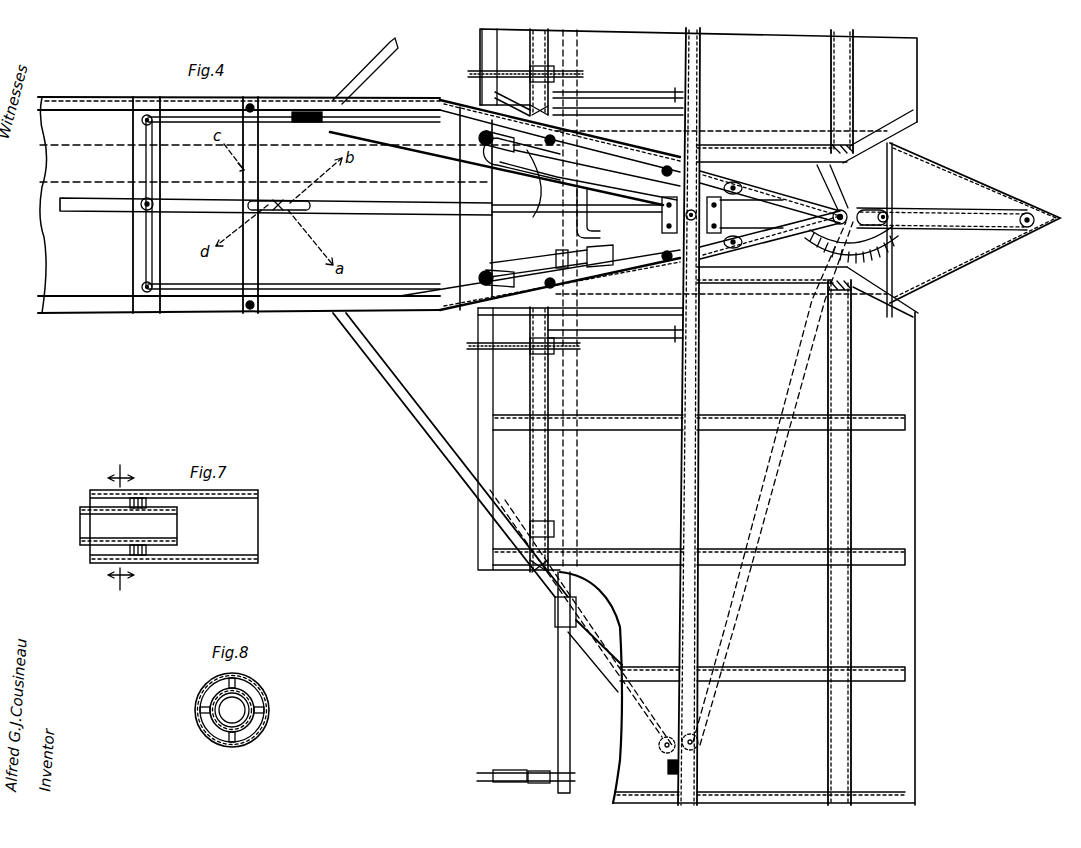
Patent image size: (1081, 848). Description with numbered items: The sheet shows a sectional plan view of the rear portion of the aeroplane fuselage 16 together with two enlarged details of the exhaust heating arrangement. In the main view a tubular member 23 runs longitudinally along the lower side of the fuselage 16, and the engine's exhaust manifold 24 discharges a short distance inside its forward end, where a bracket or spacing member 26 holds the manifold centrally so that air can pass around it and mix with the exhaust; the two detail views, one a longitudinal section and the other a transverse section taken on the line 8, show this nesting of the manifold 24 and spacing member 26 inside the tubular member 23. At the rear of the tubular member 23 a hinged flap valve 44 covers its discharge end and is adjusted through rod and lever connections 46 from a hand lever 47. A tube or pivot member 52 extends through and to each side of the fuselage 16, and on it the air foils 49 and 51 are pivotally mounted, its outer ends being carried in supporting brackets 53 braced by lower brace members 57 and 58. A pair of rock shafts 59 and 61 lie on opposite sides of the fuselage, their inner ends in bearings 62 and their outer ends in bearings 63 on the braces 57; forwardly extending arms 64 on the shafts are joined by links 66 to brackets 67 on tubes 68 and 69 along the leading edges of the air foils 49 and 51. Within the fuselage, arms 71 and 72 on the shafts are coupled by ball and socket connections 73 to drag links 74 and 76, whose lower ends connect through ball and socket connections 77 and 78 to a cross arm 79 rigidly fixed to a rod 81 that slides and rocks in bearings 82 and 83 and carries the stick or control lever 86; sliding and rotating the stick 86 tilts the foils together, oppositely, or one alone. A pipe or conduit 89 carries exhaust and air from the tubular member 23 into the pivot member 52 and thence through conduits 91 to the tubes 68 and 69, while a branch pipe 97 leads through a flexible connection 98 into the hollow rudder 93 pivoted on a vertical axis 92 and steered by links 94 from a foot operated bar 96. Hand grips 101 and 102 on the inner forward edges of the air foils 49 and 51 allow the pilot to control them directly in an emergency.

In FIG. 4, the fuselage 16 is at (105, 97).
In FIG. 4, the tubular member 23 is at (45, 183).
In FIG. 7, the tubular member 23 is at (250, 563).
In FIG. 8, the tubular member 23 is at (262, 733).
In FIG. 7, the exhaust manifold 24 is at (85, 516).
In FIG. 8, the exhaust manifold 24 is at (255, 704).
In FIG. 7, the bracket or spacing member 26 is at (148, 497).
In FIG. 8, the bracket or spacing member 26 is at (248, 684).
In FIG. 7, the section line 8— 8 is at (121, 528).
In FIG. 4, the flap valve 44 is at (640, 142).
In FIG. 4, the rod and lever connections 46 is at (432, 152).
In FIG. 4, the hand lever 47 is at (310, 112).
In FIG. 4, the air foil 49 is at (916, 490).
In FIG. 4, the air foil 51 is at (919, 88).
In FIG. 4, the tube or pivot member 52 is at (682, 473).
In FIG. 4, the supporting brackets 53 is at (704, 770).
In FIG. 4, the lower brace member 57 is at (382, 52).
In FIG. 4, the lower brace member 58 is at (768, 478).
In FIG. 4, the rock shaft 59 is at (558, 665).
In FIG. 4, the rock shaft 61 is at (580, 58).
In FIG. 4, the bearings 62 is at (580, 132).
In FIG. 4, the bearings 63 is at (555, 618).
In FIG. 4, the forwardly extending arms 64 is at (548, 770).
In FIG. 4, the links 66 is at (500, 770).
In FIG. 4, the brackets 67 is at (528, 66).
In FIG. 4, the tube 68 is at (530, 458).
In FIG. 4, the tube 69 is at (482, 35).
In FIG. 4, the forwardly extending arm 71 is at (497, 263).
In FIG. 4, the forwardly extending arm 72 is at (488, 162).
In FIG. 4, the ball and socket connections 73 is at (480, 140).
In FIG. 4, the drag link 74 is at (525, 263).
In FIG. 4, the drag link 76 is at (520, 182).
In FIG. 4, the ball and socket connection 77 is at (606, 255).
In FIG. 4, the ball and socket connection 78 is at (612, 176).
In FIG. 4, the cross arm 79 is at (590, 230).
In FIG. 4, the rod 81 is at (412, 212).
In FIG. 4, the bearing 82 is at (140, 202).
In FIG. 4, the bearing 83 is at (460, 216).
In FIG. 4, the stick or control lever 86 is at (278, 212).
In FIG. 4, the pipe or conduit 89 is at (533, 217).
In FIG. 4, the pipes or conduits 91 is at (632, 92).
In FIG. 4, the vertical axis 92 is at (844, 208).
In FIG. 4, the hollow rudder 93 is at (930, 208).
In FIG. 4, the links 94 is at (293, 122).
In FIG. 4, the foot operated bar 96 is at (146, 231).
In FIG. 4, the branch pipe 97 is at (796, 243).
In FIG. 4, the flexible connection 98 is at (898, 242).
In FIG. 4, the hand grip 101 is at (470, 350).
In FIG. 4, the hand grip 102 is at (478, 70).